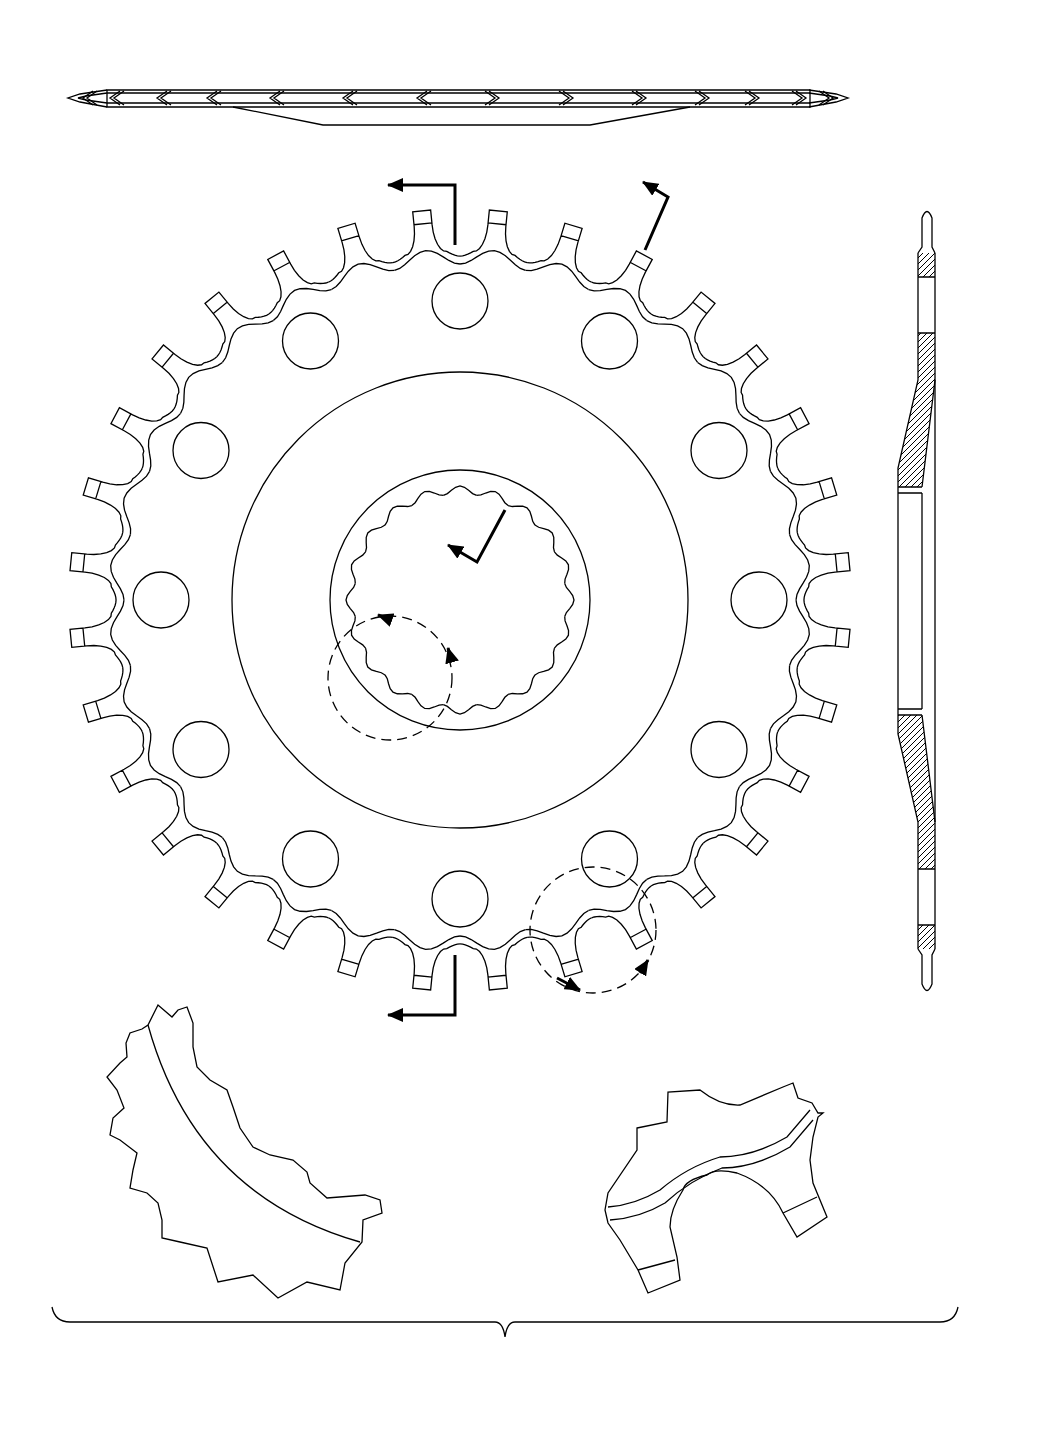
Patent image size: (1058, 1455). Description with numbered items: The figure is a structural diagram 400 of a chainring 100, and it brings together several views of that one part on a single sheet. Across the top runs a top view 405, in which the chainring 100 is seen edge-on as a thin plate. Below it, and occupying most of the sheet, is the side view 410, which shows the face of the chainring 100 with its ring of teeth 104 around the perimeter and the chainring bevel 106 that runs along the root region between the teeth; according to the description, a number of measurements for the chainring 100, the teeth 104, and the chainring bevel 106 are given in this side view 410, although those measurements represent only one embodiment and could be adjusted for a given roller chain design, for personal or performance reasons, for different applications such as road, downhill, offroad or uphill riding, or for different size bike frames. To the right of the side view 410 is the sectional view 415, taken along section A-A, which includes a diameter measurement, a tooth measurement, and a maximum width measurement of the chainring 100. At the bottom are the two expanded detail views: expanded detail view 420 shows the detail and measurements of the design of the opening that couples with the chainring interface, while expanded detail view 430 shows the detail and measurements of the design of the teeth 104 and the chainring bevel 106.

The structural diagram 400 is at (147, 38).
The top view 405 is at (305, 74).
The chainring 100 is at (138, 107).
The side view 410 is at (164, 272).
The teeth 104 is at (262, 267).
The chainring bevel 106 is at (89, 605).
The sectional view 415 is at (897, 201).
The expanded detail view 420 is at (286, 1098).
The expanded detail view 430 is at (615, 1097).